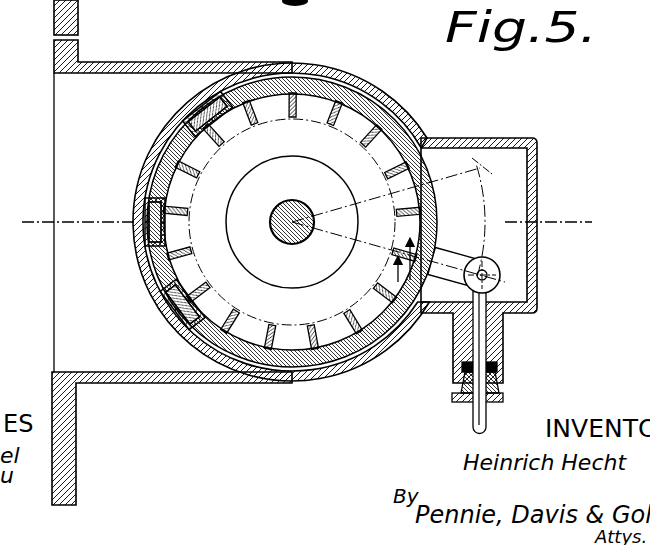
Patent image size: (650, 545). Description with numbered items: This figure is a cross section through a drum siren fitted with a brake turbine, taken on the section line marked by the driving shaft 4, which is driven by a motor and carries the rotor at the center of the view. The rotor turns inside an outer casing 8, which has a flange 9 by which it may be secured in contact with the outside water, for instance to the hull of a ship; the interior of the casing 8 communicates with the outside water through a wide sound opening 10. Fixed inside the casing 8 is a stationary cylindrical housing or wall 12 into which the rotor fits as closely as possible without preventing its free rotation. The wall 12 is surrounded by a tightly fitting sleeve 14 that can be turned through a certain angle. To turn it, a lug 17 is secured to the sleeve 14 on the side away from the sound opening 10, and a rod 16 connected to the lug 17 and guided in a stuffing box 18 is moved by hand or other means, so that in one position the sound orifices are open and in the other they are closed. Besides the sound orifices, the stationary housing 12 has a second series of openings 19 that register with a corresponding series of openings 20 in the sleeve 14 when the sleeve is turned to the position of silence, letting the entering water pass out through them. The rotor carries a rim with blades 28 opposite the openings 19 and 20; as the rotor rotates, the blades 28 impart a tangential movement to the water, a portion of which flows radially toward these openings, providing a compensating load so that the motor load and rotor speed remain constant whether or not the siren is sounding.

The driving shaft 4 is at (320, 208).
The outer casing 8 is at (318, 383).
The flange 9 is at (66, 423).
The sound opening 10 is at (85, 182).
The stationary cylindrical housing 12 is at (386, 92).
The sleeve 14 is at (212, 100).
The rod 16 is at (476, 415).
The lug 17 is at (458, 257).
The stuffing box 18 is at (498, 395).
The openings 19 is at (205, 118).
The openings 20 is at (190, 128).
The blades 28 is at (368, 134).